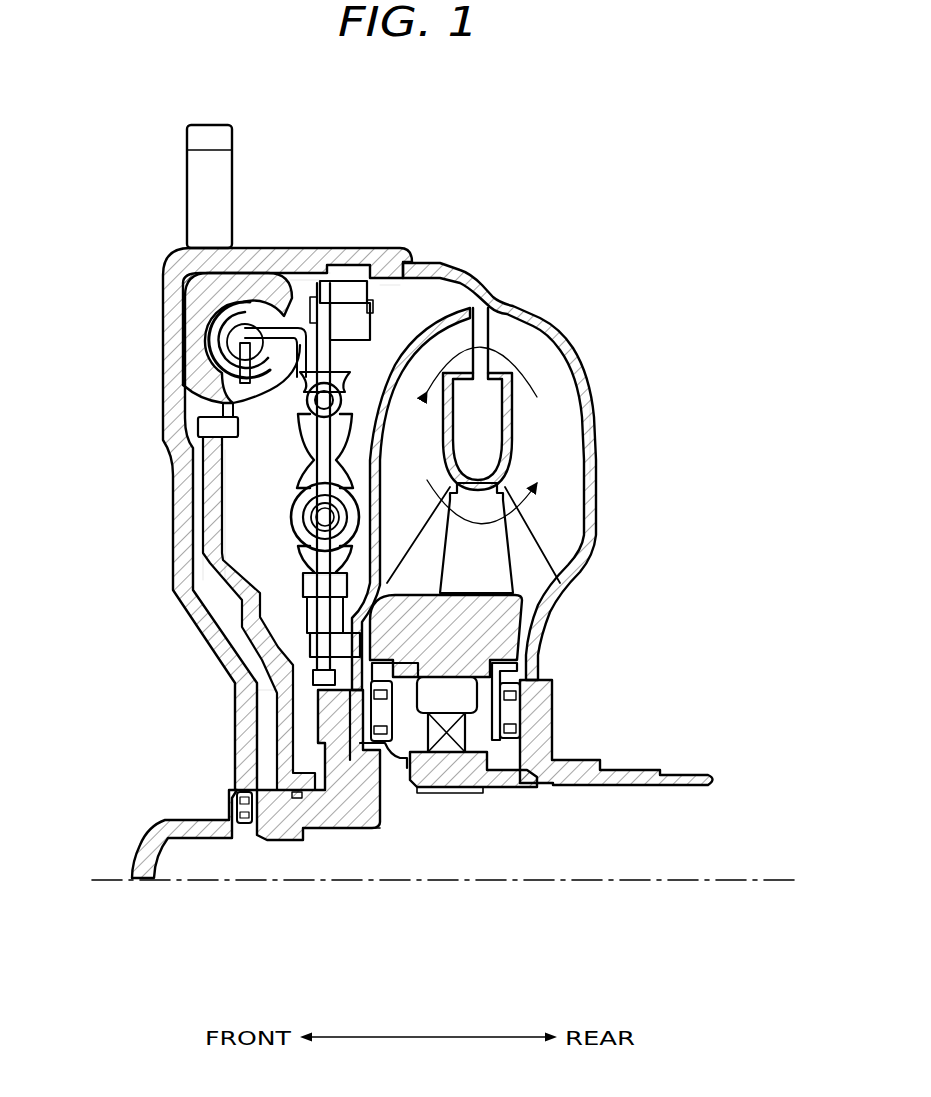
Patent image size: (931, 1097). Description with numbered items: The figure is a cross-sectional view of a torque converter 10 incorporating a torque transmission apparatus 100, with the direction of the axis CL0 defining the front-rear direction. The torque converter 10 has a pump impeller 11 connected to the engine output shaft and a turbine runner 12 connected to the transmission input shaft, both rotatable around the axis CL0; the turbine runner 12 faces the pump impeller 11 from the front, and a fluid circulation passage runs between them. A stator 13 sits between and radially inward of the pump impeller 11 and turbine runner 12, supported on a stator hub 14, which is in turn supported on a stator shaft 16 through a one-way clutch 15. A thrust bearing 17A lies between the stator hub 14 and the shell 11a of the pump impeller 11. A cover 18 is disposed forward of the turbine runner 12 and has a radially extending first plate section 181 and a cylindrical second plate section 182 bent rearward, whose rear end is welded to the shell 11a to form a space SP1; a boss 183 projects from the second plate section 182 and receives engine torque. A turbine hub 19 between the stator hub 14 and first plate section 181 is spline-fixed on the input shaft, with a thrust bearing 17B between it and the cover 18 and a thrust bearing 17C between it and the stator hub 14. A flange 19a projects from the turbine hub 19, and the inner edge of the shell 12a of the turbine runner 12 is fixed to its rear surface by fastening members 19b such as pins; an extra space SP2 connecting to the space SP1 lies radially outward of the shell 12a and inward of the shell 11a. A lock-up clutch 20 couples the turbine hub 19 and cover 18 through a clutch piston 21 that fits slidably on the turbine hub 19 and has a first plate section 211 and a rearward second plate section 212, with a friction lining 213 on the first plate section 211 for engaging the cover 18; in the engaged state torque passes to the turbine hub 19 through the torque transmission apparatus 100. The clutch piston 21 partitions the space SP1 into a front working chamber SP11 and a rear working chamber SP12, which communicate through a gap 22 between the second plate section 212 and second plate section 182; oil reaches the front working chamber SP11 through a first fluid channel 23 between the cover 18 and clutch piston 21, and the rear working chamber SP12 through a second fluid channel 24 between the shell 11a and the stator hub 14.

The torque converter 10 is at (565, 298).
The pump impeller 11 is at (557, 373).
The shell of the pump impeller 11a is at (597, 442).
The turbine runner 12 is at (457, 333).
The shell of the turbine runner 12a is at (423, 330).
The stator 13 is at (497, 567).
The stator hub 14 is at (513, 627).
The one-way clutch 15 is at (447, 750).
The stator shaft 16 is at (487, 778).
The thrust bearing 17A is at (513, 718).
The thrust bearing 17B is at (238, 806).
The thrust bearing 17C is at (381, 745).
The cover 18 is at (170, 522).
The turbine hub 19 is at (278, 842).
The flange 19a is at (330, 679).
The fastening members 19b is at (330, 657).
The lock-up clutch 20 is at (158, 260).
The clutch piston 21 is at (173, 590).
The gap 22 is at (277, 277).
The first fluid channel 23 is at (270, 742).
The second fluid channel 24 is at (530, 657).
The torque transmission apparatus 100 is at (280, 539).
The first plate section 181 is at (160, 345).
The second plate section 182 is at (333, 247).
The boss 183 is at (187, 199).
The first plate section 211 is at (205, 468).
The second plate section 212 is at (243, 283).
The friction lining 213 is at (183, 317).
The space SP1 is at (302, 276).
The extra space SP2 is at (390, 293).
The front working chamber SP11 is at (200, 397).
The rear working chamber SP12 is at (250, 492).
The axis CL0 is at (417, 881).